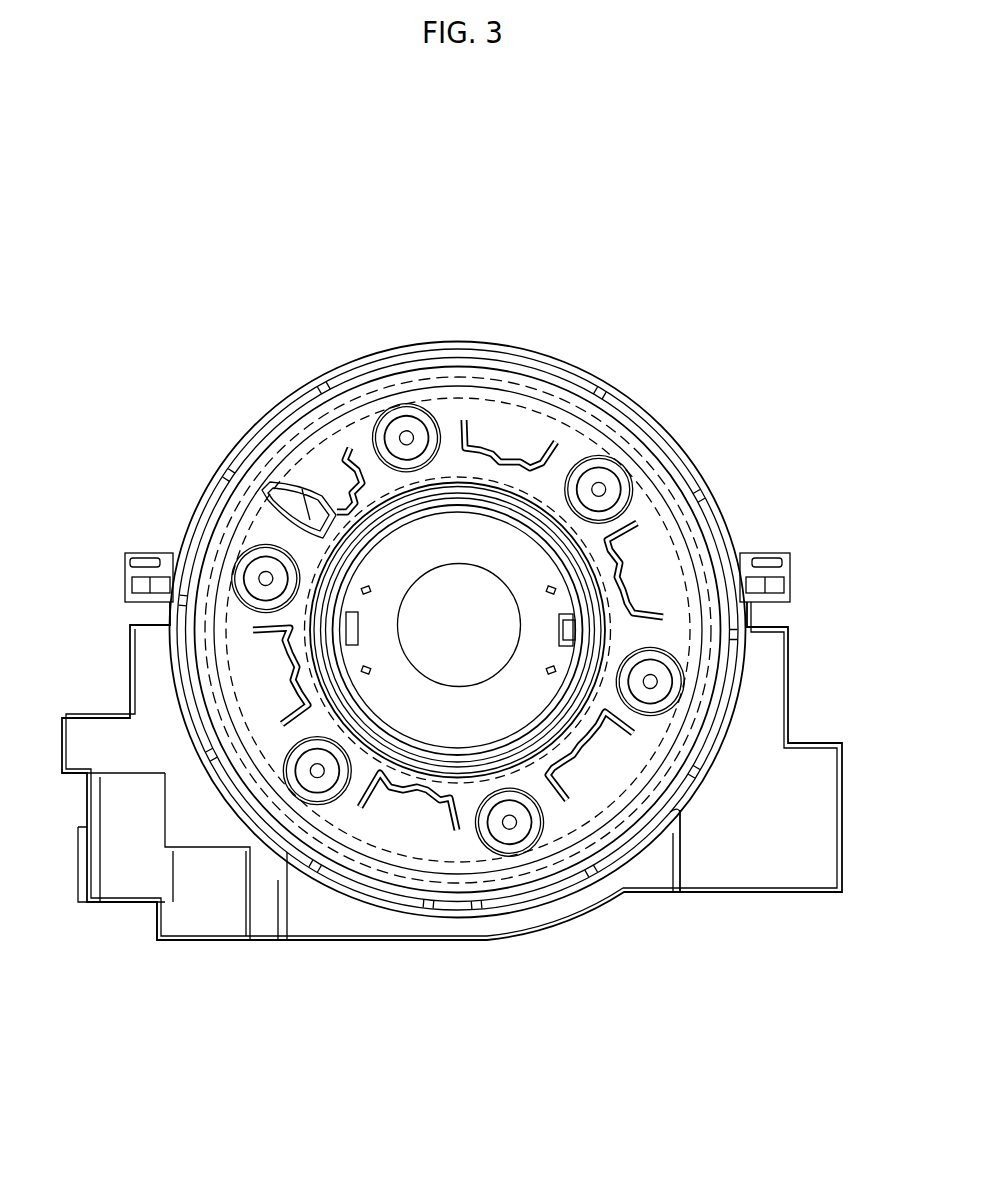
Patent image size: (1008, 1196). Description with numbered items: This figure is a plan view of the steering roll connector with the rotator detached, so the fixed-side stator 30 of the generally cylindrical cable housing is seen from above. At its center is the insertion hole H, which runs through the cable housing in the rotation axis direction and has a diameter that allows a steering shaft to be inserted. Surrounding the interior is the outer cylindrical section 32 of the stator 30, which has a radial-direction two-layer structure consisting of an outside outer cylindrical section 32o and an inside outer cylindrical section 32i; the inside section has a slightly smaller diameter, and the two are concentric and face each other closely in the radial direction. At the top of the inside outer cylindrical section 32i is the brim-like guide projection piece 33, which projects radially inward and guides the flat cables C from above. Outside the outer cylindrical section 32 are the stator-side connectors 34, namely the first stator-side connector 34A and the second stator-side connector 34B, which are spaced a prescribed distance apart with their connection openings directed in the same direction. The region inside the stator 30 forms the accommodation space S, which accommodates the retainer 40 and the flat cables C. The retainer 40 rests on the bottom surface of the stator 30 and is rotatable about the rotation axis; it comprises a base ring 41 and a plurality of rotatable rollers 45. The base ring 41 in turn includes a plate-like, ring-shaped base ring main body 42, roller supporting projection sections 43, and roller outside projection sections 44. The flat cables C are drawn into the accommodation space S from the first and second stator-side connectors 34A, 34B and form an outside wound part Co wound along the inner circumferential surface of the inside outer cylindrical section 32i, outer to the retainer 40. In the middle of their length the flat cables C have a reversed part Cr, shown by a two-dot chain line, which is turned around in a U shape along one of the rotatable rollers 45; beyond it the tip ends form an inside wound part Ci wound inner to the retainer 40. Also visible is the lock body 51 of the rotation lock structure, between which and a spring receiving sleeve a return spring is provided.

The stator 30 is at (236, 428).
The outer cylindrical section 32 is at (443, 771).
The outside outer cylindrical section 32o is at (187, 642).
The inside outer cylindrical section 32i is at (187, 693).
The guide projection piece 33 is at (650, 462).
The stator-side connectors 34 is at (464, 899).
The first stator-side connector 34A is at (212, 942).
The second stator-side connector 34B is at (735, 896).
The retainer 40 is at (458, 523).
The base ring 41 is at (458, 543).
The base ring main body 42 is at (360, 418).
The roller supporting projection sections 43 is at (411, 400).
The roller outside projection sections 44 is at (490, 450).
The rotatable rollers 45 is at (568, 455).
The lock body 51 is at (535, 597).
The flat cables C is at (377, 630).
The inside wound part Ci is at (343, 510).
The reversed part Cr is at (240, 557).
The outside wound part Co is at (213, 597).
The insertion hole H is at (468, 632).
The accommodation space S is at (662, 587).